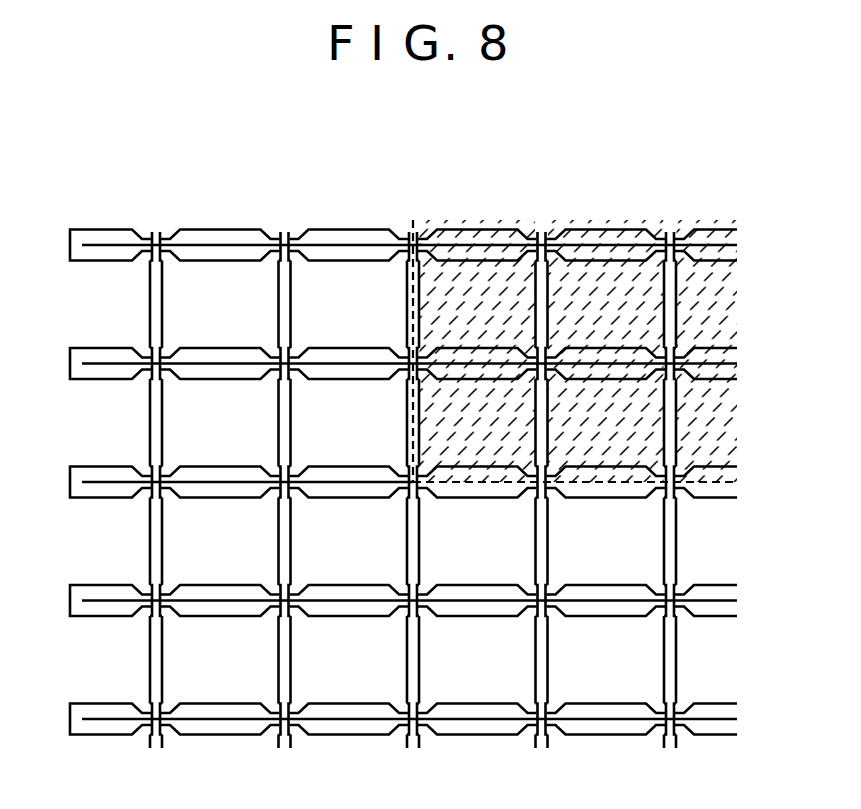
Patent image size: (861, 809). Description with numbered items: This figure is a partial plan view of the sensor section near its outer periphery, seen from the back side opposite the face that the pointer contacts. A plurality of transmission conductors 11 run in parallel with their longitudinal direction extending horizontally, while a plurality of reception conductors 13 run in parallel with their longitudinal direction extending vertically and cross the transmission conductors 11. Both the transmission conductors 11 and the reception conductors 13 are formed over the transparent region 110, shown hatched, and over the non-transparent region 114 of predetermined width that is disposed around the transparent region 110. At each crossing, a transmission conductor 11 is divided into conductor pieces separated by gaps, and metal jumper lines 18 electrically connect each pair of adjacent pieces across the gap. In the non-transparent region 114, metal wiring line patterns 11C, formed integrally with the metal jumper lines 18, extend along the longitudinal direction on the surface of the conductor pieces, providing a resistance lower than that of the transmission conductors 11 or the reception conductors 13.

The transmission conductor 11 is at (240, 237).
The metal wiring line pattern 11C is at (330, 238).
The reception conductor 13 is at (155, 300).
The metal jumper line 18 is at (292, 240).
The transparent region 110 is at (475, 211).
The non-transparent region 114 is at (216, 300).